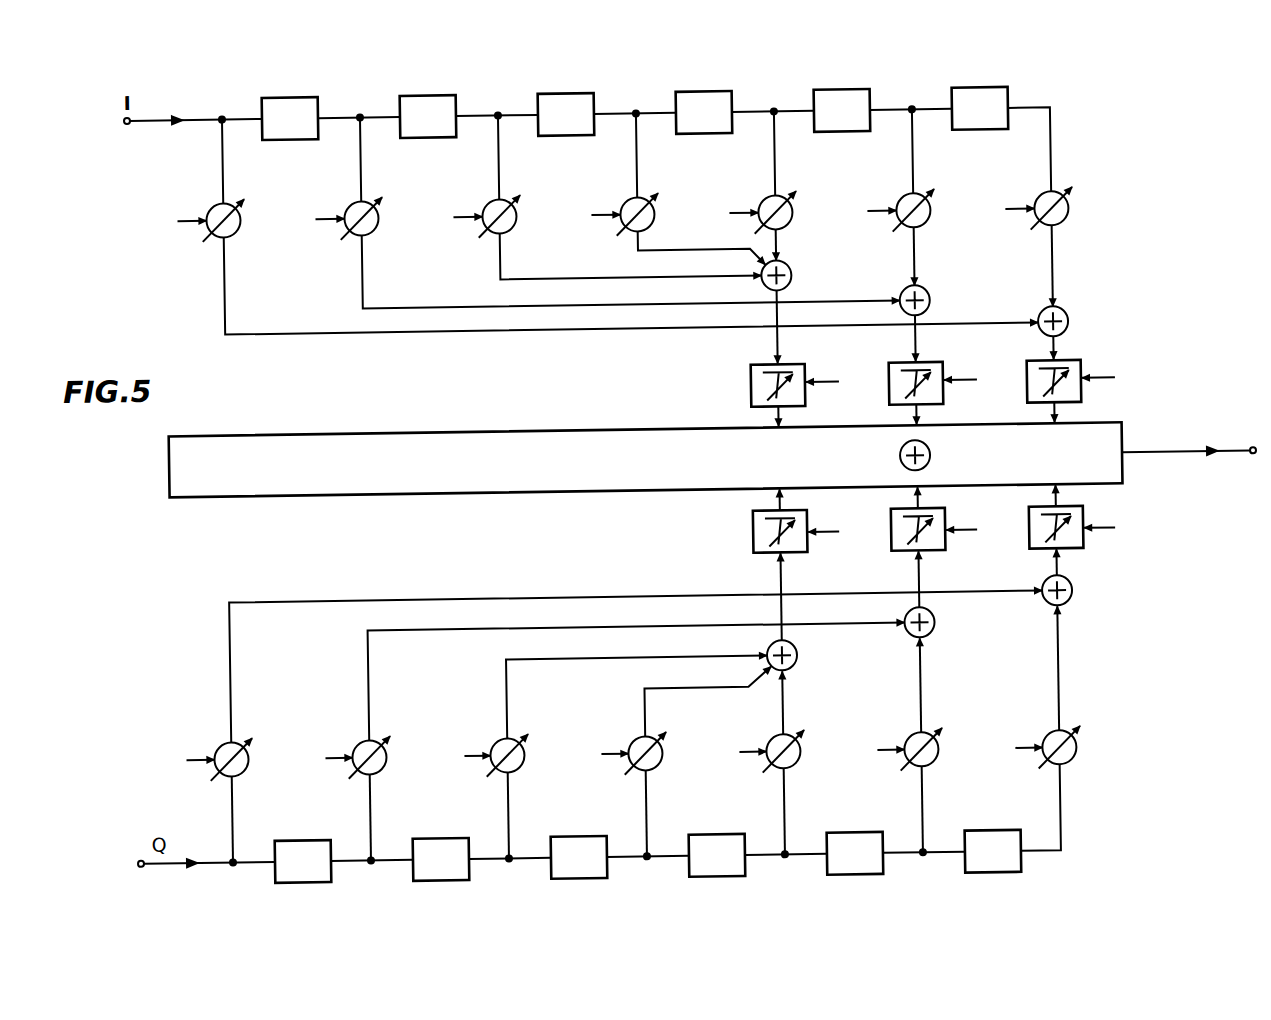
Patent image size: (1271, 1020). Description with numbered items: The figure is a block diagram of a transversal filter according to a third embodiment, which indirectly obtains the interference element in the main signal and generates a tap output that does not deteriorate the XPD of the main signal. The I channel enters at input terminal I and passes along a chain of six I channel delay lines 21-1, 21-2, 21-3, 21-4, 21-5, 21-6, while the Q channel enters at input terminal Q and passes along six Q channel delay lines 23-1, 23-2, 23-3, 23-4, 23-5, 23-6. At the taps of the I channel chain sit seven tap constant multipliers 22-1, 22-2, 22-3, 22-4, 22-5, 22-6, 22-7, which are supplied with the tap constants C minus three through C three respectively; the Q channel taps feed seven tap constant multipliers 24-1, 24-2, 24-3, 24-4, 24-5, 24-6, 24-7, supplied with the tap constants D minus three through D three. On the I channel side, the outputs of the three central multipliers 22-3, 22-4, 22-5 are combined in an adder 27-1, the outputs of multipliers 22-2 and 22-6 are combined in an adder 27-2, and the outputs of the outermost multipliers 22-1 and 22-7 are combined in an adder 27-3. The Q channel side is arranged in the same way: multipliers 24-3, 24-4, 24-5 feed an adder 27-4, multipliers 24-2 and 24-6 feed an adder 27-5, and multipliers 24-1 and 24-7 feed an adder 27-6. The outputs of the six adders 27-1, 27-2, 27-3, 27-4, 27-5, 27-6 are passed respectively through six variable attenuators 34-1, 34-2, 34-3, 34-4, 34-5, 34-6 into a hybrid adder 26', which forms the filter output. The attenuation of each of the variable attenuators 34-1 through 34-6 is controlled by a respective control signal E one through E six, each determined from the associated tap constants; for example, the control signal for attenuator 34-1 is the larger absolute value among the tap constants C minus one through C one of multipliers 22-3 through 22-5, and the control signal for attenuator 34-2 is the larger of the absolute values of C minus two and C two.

The I channel delay line 21-1 is at (306, 100).
The I channel delay line 21-2 is at (444, 100).
The I channel delay line 21-3 is at (582, 100).
The I channel delay line 21-4 is at (720, 100).
The I channel delay line 21-5 is at (858, 100).
The I channel delay line 21-6 is at (996, 100).
The tap constant multiplier 22-1 is at (238, 232).
The tap constant multiplier 22-2 is at (376, 232).
The tap constant multiplier 22-3 is at (514, 232).
The tap constant multiplier 22-4 is at (646, 204).
The tap constant multiplier 22-5 is at (790, 225).
The tap constant multiplier 22-6 is at (928, 225).
The tap constant multiplier 22-7 is at (1066, 225).
The adder 27-1 is at (785, 296).
The adder 27-2 is at (923, 323).
The adder 27-3 is at (1062, 347).
The adder 27-4 is at (790, 660).
The adder 27-5 is at (924, 623).
The adder 27-6 is at (1061, 591).
The variable attenuator 34-1 is at (795, 417).
The variable attenuator 34-2 is at (933, 417).
The variable attenuator 34-3 is at (1071, 417).
The variable attenuator 34-4 is at (796, 521).
The variable attenuator 34-5 is at (934, 521).
The variable attenuator 34-6 is at (1072, 521).
The hybrid adder 26' is at (712, 451).
The Q channel delay line 23-1 is at (302, 886).
The Q channel delay line 23-2 is at (440, 886).
The Q channel delay line 23-3 is at (578, 886).
The Q channel delay line 23-4 is at (716, 886).
The Q channel delay line 23-5 is at (854, 886).
The Q channel delay line 23-6 is at (992, 886).
The tap constant multiplier 24-1 is at (236, 747).
The tap constant multiplier 24-2 is at (374, 747).
The tap constant multiplier 24-3 is at (512, 747).
The tap constant multiplier 24-4 is at (650, 778).
The tap constant multiplier 24-5 is at (788, 747).
The tap constant multiplier 24-6 is at (926, 747).
The tap constant multiplier 24-7 is at (1064, 747).